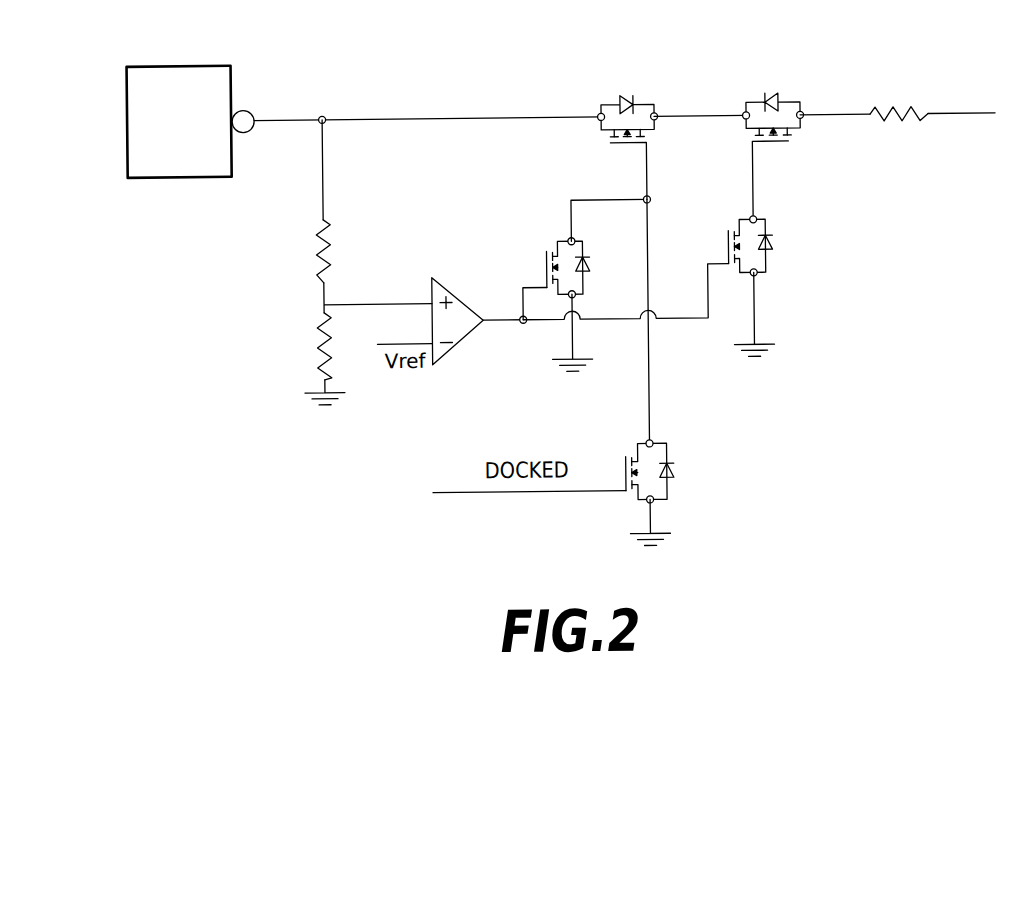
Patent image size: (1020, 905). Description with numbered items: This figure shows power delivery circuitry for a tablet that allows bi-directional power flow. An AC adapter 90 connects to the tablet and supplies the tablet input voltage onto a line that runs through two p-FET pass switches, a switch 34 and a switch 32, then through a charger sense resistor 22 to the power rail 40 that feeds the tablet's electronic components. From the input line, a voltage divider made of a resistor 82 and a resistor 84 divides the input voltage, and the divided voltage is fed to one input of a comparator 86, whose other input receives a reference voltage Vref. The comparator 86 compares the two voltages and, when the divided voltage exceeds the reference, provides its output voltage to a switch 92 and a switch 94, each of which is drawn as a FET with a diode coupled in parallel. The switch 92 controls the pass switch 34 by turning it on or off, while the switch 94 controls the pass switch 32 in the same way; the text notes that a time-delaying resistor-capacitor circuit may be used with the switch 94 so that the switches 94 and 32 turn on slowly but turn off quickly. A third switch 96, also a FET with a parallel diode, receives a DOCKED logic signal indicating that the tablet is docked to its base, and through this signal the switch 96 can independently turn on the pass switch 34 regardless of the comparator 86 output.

The AC adapter 90 is at (200, 63).
The resistor 82 is at (328, 248).
The resistor 84 is at (322, 345).
The comparator 86 is at (457, 345).
The switch 92 is at (541, 269).
The switch 34 is at (624, 95).
The switch 32 is at (768, 94).
The charger sense resistor 22 is at (925, 110).
The power rail 40 is at (970, 119).
The switch 94 is at (775, 238).
The switch 96 is at (676, 468).